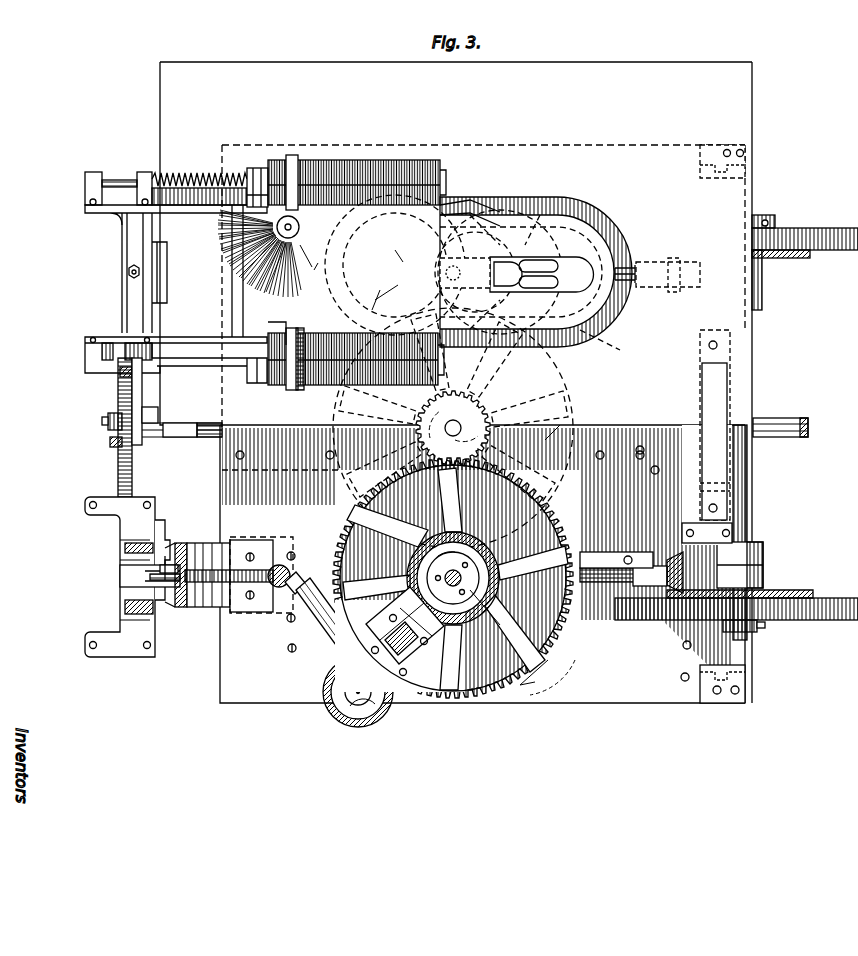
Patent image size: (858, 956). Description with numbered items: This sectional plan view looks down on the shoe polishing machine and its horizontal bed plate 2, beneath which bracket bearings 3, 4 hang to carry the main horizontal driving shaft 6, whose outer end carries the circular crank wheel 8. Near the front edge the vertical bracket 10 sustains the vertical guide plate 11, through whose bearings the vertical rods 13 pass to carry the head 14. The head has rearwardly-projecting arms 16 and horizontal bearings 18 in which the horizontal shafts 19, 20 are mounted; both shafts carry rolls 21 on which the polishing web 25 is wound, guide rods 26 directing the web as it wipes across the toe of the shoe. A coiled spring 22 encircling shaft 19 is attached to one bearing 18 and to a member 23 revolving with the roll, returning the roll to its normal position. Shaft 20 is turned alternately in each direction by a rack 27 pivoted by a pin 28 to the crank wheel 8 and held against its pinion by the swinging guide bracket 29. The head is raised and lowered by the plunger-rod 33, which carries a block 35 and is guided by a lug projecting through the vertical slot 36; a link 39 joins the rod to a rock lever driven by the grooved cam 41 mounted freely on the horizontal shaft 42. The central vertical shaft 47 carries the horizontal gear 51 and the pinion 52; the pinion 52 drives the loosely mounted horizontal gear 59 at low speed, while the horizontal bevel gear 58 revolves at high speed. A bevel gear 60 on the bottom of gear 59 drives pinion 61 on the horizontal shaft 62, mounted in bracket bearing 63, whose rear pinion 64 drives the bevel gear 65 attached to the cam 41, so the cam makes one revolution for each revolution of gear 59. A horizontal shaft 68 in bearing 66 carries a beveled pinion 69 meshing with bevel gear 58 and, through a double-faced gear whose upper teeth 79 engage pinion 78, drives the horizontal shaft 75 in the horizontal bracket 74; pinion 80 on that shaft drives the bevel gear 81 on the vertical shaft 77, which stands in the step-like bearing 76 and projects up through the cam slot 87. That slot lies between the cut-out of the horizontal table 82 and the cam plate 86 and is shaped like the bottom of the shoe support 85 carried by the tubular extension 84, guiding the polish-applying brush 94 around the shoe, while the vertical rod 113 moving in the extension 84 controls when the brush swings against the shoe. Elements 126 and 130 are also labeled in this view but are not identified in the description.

The bed plate 2 is at (773, 428).
The bracket bearing 3 is at (153, 441).
The bracket bearing 4 is at (212, 438).
The main horizontal driving shaft 6 is at (184, 438).
The circular crank wheel 8 is at (118, 484).
The vertical bracket 10 is at (213, 598).
The vertical guide plate 11 is at (130, 520).
The vertical rods 13 is at (89, 505).
The head 14 is at (122, 216).
The rearwardly-projecting arm 16 is at (196, 206).
The horizontal bearings 18 is at (147, 172).
The horizontal shaft 19 is at (122, 176).
The horizontal shaft 20 is at (188, 364).
The rolls 21 is at (296, 166).
The coiled spring 22 is at (205, 172).
The member 23 is at (256, 168).
The web 25 is at (382, 265).
The guide rods 26 is at (368, 345).
The racks 27 is at (118, 404).
The pin 28 is at (102, 421).
The swinging guide bracket 29 is at (138, 385).
The plunger-rod 33 is at (128, 272).
The block 35 is at (132, 577).
The vertical slot 36 is at (140, 584).
The link 39 is at (168, 563).
The cam 41 is at (778, 238).
The horizontal shaft 42 is at (745, 484).
The vertical shaft 47 is at (452, 421).
The horizontal gear 51 is at (562, 426).
The pinion 52 is at (480, 434).
The horizontal bevel gear 58 is at (455, 579).
The horizontal gear 59 is at (540, 345).
The bevel gear 60 is at (398, 563).
The pinion 61 is at (492, 584).
The horizontal shaft 62 is at (628, 282).
The bracket bearing 63 is at (613, 552).
The pinion 64 is at (678, 262).
The bevel gear 65 is at (802, 260).
The bearing 66 is at (392, 640).
The horizontal shaft 68 is at (412, 645).
The beveled pinion 69 is at (420, 612).
The horizontal bracket 74 is at (312, 626).
The horizontal shaft 75 is at (320, 644).
The step-like bearing 76 is at (282, 590).
The vertical shaft 77 is at (274, 565).
The pinion 78 is at (335, 668).
The upper teeth 79 is at (340, 720).
The pinion 80 is at (300, 576).
The bevel gear 81 is at (292, 556).
The horizontal table 82 is at (483, 262).
The tubular extension 84 is at (443, 576).
The shoe support 85 is at (515, 258).
The cam plate 86 is at (533, 272).
The cam slot 87 is at (601, 341).
The polish-applying brush 94 is at (296, 330).
The vertical rod 113 is at (477, 616).
The lower cylinder 126 is at (341, 369).
The brush 130 is at (226, 240).